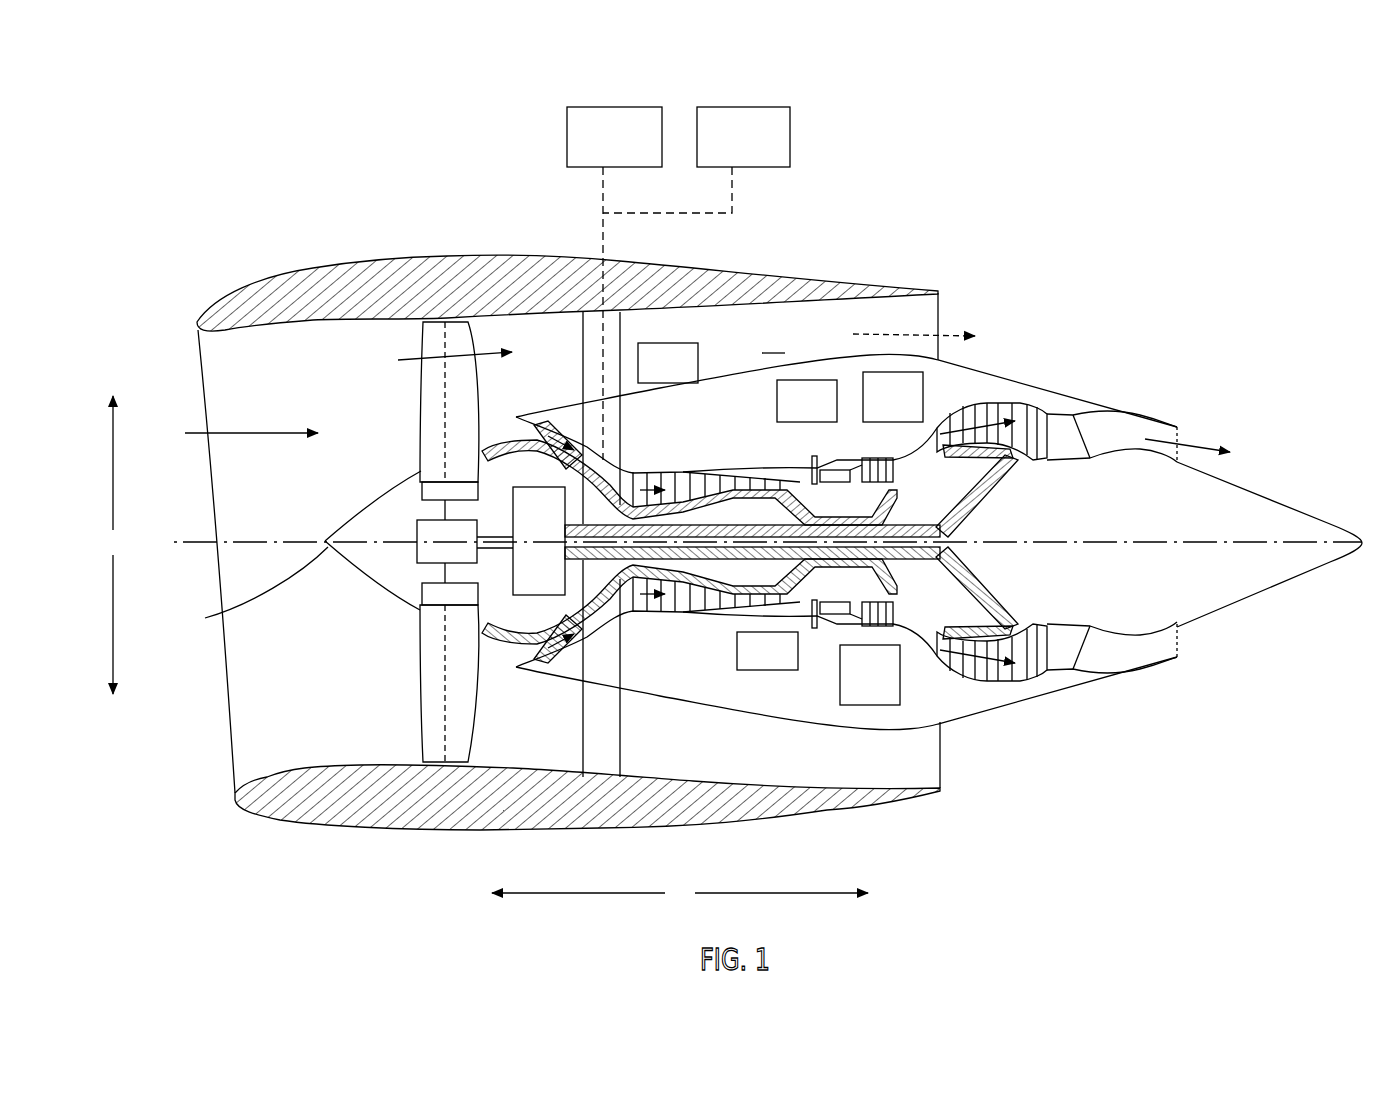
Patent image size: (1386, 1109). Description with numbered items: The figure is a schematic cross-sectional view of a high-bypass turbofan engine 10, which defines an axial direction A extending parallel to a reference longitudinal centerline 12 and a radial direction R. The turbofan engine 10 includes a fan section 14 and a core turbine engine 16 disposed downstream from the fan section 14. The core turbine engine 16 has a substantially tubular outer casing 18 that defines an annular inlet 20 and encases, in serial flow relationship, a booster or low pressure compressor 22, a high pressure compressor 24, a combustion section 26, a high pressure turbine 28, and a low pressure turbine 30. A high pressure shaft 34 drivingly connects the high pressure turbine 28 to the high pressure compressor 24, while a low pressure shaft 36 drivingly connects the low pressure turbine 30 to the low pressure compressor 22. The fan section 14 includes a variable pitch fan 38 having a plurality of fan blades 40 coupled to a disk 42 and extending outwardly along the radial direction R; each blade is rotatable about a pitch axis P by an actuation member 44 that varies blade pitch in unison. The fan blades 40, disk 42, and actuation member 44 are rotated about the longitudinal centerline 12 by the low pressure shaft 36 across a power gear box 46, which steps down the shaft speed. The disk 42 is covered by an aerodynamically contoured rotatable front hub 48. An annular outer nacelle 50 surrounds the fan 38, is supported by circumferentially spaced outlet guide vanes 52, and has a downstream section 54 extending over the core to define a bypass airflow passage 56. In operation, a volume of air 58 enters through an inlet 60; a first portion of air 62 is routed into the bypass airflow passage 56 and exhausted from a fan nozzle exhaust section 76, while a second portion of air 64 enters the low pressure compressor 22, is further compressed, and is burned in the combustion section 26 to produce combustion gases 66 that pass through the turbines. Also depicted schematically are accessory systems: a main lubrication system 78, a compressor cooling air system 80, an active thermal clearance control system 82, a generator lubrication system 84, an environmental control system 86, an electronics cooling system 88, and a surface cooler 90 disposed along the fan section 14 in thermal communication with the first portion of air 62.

The turbofan engine 10 is at (1090, 262).
The longitudinal centerline 12 is at (1110, 541).
The fan section 14 is at (375, 345).
The core turbine engine 16 is at (745, 408).
The outer casing 18 is at (778, 713).
The annular inlet 20 is at (523, 654).
The low pressure compressor 22 is at (568, 632).
The high pressure compressor 24 is at (652, 602).
The combustion section 26 is at (832, 614).
The high pressure turbine 28 is at (898, 616).
The low pressure turbine 30 is at (1025, 682).
The high pressure shaft 34 is at (850, 505).
The low pressure shaft 36 is at (985, 501).
The variable pitch fan 38 is at (382, 597).
The fan blades 40 is at (420, 703).
The disk 42 is at (438, 492).
The actuation member 44 is at (415, 530).
The power gear box 46 is at (608, 478).
The rotatable front hub 48 is at (249, 590).
The outer nacelle 50 is at (470, 830).
The outlet guide vanes 52 is at (620, 311).
The downstream section 54 is at (880, 287).
The bypass airflow passage 56 is at (773, 338).
The volume of air 58 is at (255, 432).
The inlet 60 is at (228, 766).
The first portion of air 62 is at (905, 328).
The second portion of air 64 is at (507, 428).
The combustion gases 66 is at (981, 414).
The fan nozzle exhaust section 76 is at (928, 320).
The main lubrication system 78 is at (900, 692).
The compressor cooling air system 80 is at (760, 670).
The active thermal clearance control system 82 is at (862, 378).
The generator lubrication system 84 is at (803, 380).
The environmental control system 86 is at (618, 106).
The electronics cooling system 88 is at (747, 106).
The surface cooler 90 is at (698, 366).
The pitch axis P is at (483, 322).
The radial direction R is at (115, 545).
The axial direction A is at (680, 892).